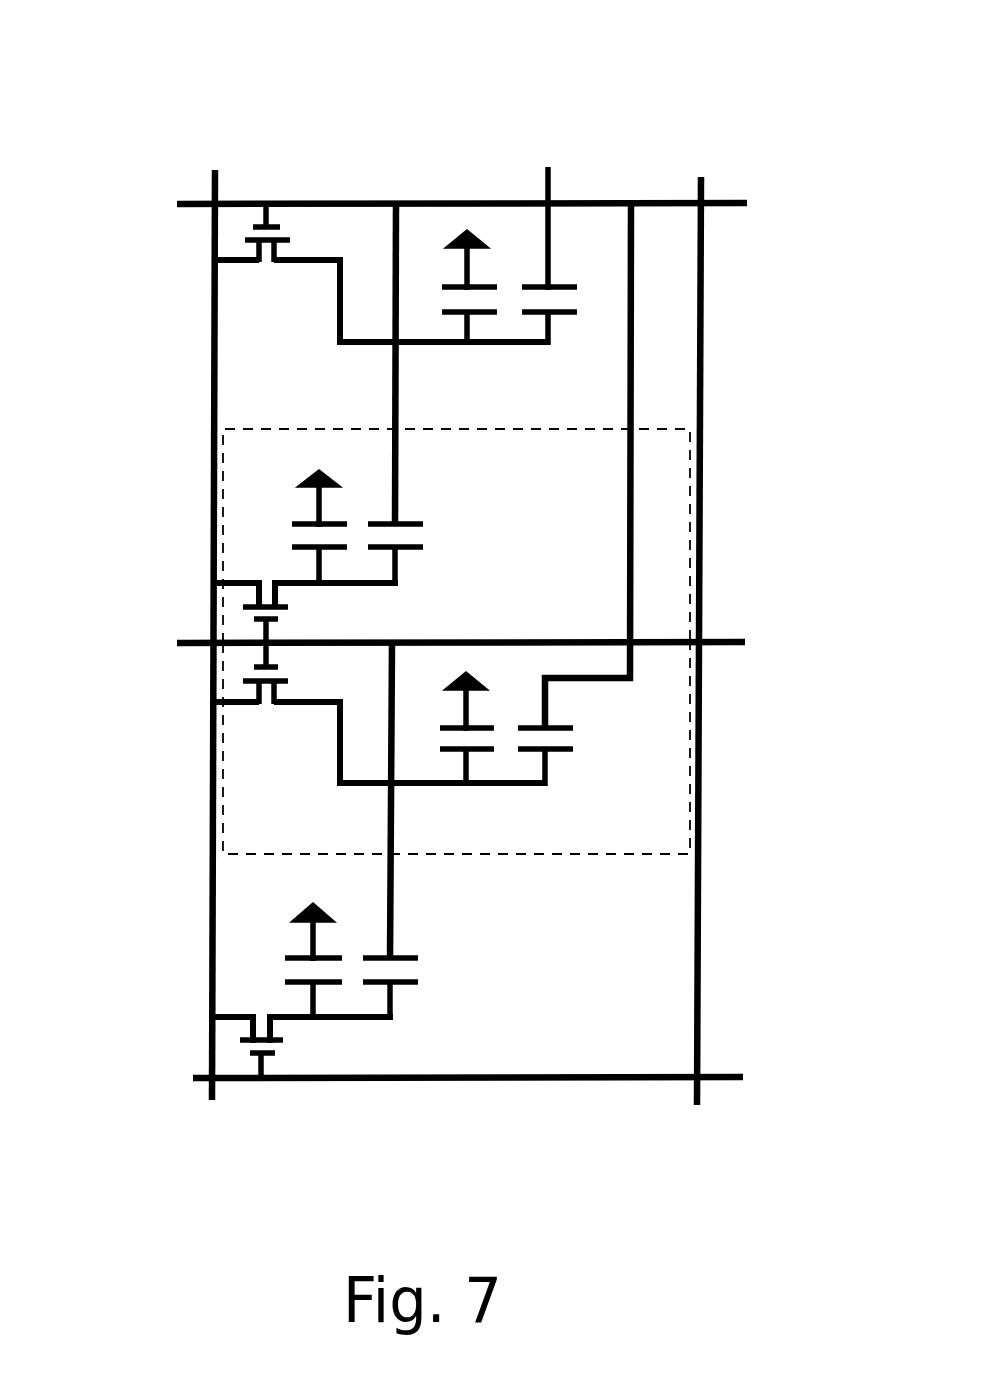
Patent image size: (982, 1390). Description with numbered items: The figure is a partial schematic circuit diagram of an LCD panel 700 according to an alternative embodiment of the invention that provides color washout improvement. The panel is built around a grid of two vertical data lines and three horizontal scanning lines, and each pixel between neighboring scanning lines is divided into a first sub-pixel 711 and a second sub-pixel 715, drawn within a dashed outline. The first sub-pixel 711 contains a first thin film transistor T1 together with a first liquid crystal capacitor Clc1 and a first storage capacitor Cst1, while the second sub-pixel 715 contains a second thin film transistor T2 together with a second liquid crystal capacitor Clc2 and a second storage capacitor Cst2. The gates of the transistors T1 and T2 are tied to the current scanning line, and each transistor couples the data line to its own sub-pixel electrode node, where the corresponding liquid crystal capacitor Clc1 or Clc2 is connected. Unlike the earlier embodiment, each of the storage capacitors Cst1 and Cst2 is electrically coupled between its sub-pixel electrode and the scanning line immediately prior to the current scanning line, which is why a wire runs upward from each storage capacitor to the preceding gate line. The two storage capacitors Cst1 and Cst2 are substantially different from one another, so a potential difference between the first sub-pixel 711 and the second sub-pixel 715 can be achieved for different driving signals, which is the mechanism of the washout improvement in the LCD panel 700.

The LCD panel 700 is at (497, 55).
The first sub-pixel 711 is at (663, 548).
The second sub-pixel 715 is at (663, 755).
The first thin film transistor T1 is at (305, 830).
The second thin film transistor T2 is at (380, 493).
The first liquid crystal capacitor Clc1 is at (295, 745).
The second liquid crystal capacitor Clc2 is at (449, 508).
The first storage capacitor Cst1 is at (412, 612).
The second storage capacitor Cst2 is at (574, 476).